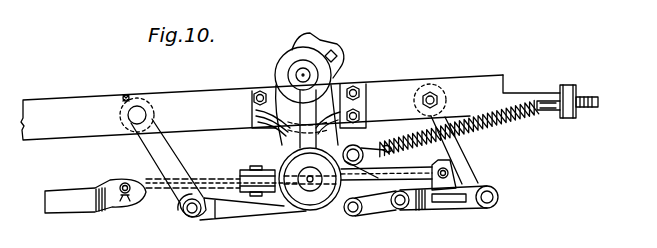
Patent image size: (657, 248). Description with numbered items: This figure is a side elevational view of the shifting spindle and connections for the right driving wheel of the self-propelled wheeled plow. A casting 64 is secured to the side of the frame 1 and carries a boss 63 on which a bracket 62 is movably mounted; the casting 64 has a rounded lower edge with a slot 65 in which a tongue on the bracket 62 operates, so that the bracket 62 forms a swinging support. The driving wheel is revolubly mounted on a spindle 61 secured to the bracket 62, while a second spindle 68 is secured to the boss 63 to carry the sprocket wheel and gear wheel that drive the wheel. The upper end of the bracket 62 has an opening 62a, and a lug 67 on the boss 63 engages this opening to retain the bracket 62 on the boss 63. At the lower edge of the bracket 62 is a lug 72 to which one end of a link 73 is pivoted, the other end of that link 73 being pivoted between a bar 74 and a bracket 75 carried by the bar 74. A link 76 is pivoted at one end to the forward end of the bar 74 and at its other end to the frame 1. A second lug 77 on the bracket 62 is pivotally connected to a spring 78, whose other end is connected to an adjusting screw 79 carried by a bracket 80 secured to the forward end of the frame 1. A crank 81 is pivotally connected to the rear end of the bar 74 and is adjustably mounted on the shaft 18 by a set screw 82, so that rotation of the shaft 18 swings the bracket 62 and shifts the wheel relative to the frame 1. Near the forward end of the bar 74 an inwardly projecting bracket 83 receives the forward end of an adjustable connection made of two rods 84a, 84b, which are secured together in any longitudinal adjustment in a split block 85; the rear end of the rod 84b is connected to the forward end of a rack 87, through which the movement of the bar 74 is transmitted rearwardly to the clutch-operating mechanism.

The frame 1 is at (290, 107).
The shaft 18 is at (133, 118).
The spindle 61 is at (303, 173).
The bracket 62 is at (275, 79).
The opening 62a is at (340, 56).
The boss 63 is at (322, 75).
The casting 64 is at (254, 126).
The slot 65 is at (280, 130).
The lug 67 is at (313, 48).
The spindle 68 is at (296, 74).
The lug 72 is at (322, 207).
The link 73 is at (372, 213).
The bar 74 is at (256, 212).
The bracket 75 is at (410, 210).
The link 76 is at (468, 155).
The lug 77 is at (353, 145).
The spring 78 is at (505, 126).
The adjusting screw 79 is at (599, 102).
The bracket 80 is at (528, 93).
The crank 81 is at (170, 165).
The set screw 82 is at (126, 95).
The bracket 83 is at (458, 171).
The rod 84a is at (425, 170).
The rod 84b is at (213, 178).
The split block 85 is at (246, 191).
The rack 87 is at (80, 212).